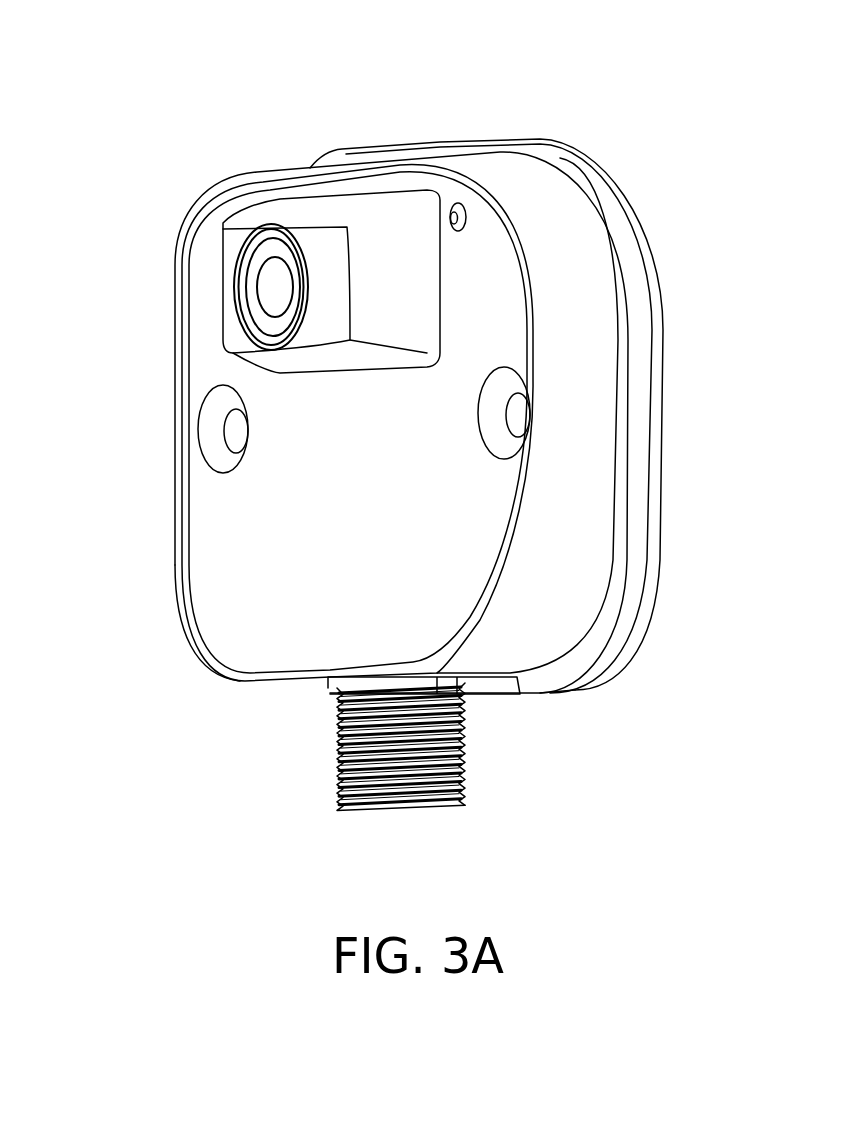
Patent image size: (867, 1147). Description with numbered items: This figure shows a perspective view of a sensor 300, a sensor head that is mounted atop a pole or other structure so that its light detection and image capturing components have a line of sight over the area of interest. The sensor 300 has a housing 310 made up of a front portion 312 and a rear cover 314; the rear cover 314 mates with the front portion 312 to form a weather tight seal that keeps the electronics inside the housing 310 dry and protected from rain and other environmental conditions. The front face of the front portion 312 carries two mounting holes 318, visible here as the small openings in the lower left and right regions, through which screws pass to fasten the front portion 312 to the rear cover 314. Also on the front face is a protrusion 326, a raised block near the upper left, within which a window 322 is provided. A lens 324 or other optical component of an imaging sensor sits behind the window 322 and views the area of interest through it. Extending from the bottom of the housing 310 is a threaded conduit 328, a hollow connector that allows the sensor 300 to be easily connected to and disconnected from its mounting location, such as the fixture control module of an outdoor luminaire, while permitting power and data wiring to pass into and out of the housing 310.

The sensor 300 is at (240, 82).
The housing 310 is at (212, 194).
The front portion 312 is at (216, 572).
The rear cover 314 is at (648, 603).
The mounting holes 318 is at (232, 430).
The window 322 is at (258, 243).
The lens 324 is at (268, 283).
The protrusion 326 is at (389, 258).
The threaded conduit 328 is at (375, 748).